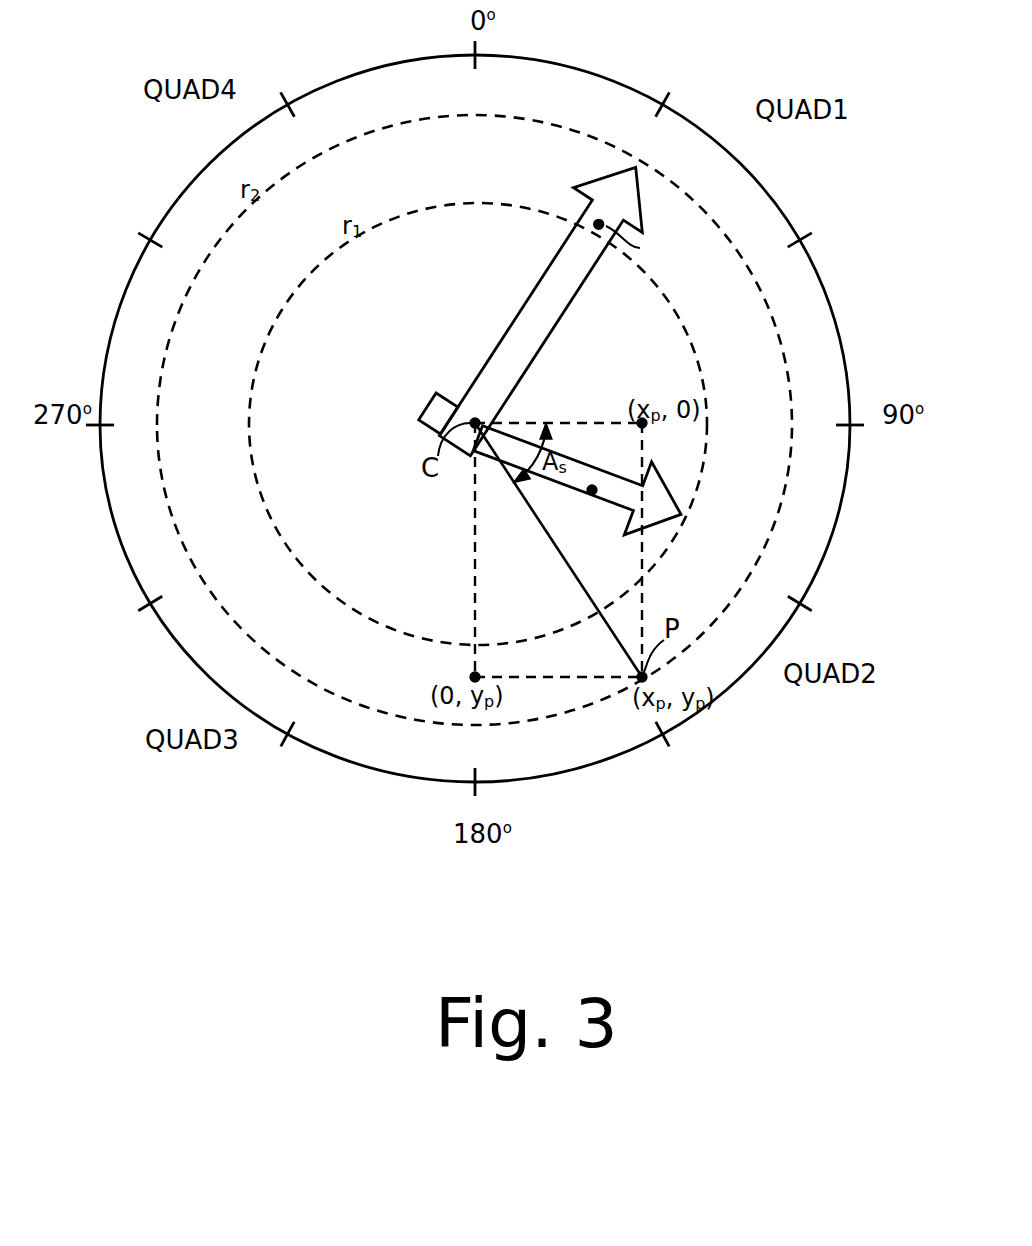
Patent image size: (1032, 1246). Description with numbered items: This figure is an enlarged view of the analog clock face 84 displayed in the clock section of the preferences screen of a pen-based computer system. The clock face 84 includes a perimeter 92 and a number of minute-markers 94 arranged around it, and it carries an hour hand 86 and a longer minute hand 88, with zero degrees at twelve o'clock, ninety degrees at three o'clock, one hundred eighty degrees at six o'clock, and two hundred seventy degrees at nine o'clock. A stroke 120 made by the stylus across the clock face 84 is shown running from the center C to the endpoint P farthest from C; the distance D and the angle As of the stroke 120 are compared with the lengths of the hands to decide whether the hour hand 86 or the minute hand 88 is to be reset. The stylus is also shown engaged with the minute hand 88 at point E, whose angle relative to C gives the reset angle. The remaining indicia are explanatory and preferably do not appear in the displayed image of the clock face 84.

The analog clock face 84 is at (845, 282).
The hour hand 86 is at (594, 492).
The minute hand 88 is at (524, 304).
The perimeter 92 is at (668, 735).
The minute-markers 94 is at (664, 96).
The stroke 120 is at (557, 553).